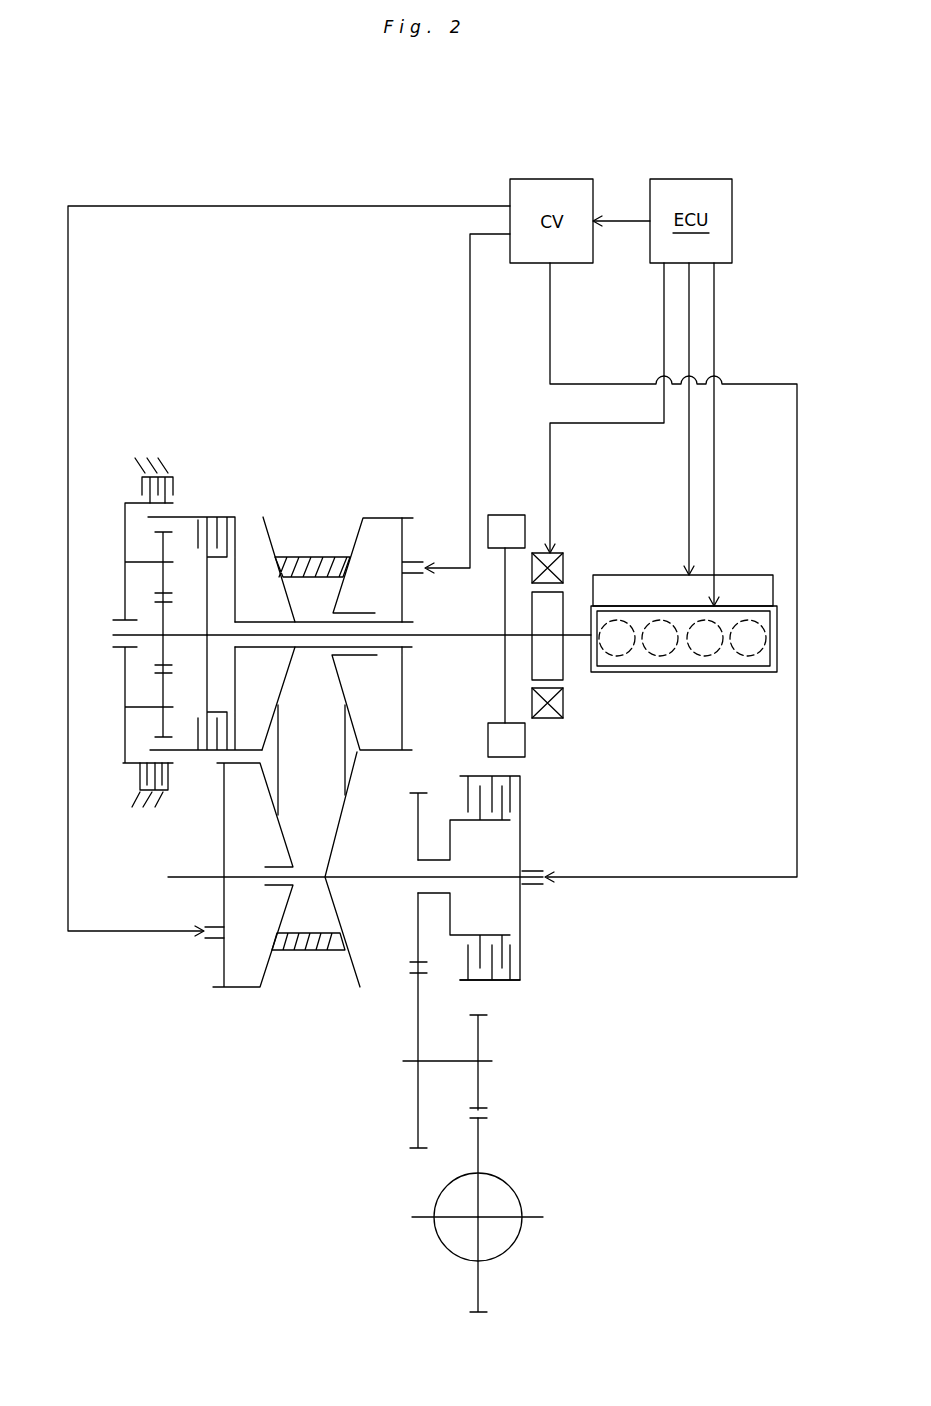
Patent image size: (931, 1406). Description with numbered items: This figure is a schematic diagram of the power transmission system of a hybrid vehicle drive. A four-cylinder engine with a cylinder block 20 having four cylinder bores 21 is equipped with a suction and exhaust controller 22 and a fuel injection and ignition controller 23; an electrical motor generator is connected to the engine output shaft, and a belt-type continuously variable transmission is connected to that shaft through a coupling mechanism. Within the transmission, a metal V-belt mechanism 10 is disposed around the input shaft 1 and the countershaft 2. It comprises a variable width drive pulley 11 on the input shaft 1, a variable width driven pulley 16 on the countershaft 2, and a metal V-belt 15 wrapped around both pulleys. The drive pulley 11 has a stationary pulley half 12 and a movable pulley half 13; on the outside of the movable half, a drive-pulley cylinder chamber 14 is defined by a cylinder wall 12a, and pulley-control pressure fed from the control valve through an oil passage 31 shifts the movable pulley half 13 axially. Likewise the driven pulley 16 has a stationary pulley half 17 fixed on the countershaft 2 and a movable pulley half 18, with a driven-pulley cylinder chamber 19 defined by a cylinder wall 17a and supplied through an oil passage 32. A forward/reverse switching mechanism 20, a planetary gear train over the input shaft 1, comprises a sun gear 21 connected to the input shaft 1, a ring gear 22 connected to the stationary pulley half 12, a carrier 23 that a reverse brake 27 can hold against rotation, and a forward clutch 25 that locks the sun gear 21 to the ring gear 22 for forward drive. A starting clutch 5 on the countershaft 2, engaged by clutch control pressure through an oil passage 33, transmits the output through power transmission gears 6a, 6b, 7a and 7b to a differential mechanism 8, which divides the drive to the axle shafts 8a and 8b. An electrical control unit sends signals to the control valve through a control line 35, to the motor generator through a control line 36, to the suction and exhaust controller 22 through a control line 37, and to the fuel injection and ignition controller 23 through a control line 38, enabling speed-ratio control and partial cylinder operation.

The input shaft 1 is at (467, 637).
The countershaft 2 is at (385, 880).
The starting clutch 5 is at (532, 958).
The power transmission gear 6a is at (418, 826).
The power transmission gear 6b is at (416, 1150).
The power transmission gear 7a is at (480, 1040).
The power transmission gear 7b is at (480, 1147).
The differential mechanism 8 is at (445, 1247).
The axle shaft 8a is at (420, 1217).
The axle shaft 8b is at (532, 1217).
The metal V-belt mechanism 10 is at (353, 622).
The variable width drive pulley 11 is at (401, 631).
The stationary pulley half 12 is at (270, 532).
The cylinder wall 12a is at (405, 597).
The movable pulley half 13 is at (355, 528).
The drive-pulley cylinder chamber 14 is at (383, 581).
The metal V-belt 15 is at (415, 722).
The variable width driven pulley 16 is at (254, 894).
The stationary pulley half 17 is at (353, 985).
The cylinder wall 17a is at (224, 840).
The movable pulley half 18 is at (266, 968).
The driven-pulley cylinder chamber 19 is at (264, 855).
The forward/reverse switching mechanism 20 is at (371, 604).
The sun gear 21 is at (160, 620).
The ring gear 22 is at (150, 748).
The carrier 23 is at (125, 535).
The forward clutch 25 is at (213, 517).
The reverse brake 27 is at (142, 487).
The oil passage 31 is at (472, 318).
The oil passage 32 is at (288, 206).
The oil passage 33 is at (762, 384).
The control line 35 is at (617, 220).
The control line 36 is at (608, 425).
The control line 37 is at (716, 495).
The control line 38 is at (691, 458).